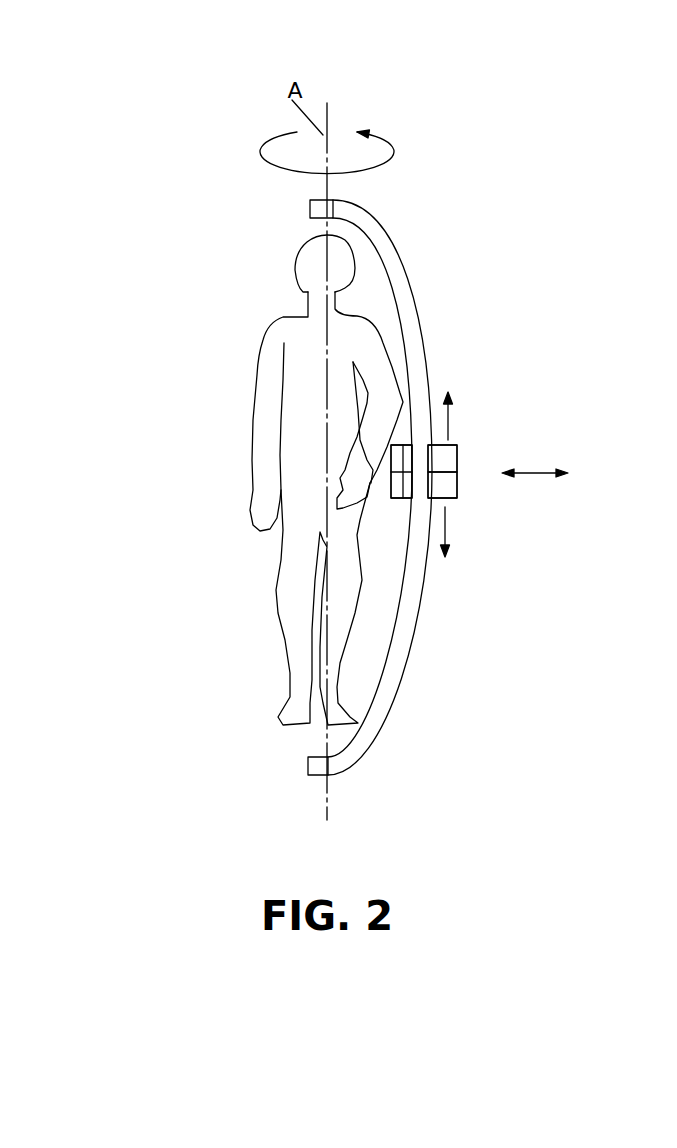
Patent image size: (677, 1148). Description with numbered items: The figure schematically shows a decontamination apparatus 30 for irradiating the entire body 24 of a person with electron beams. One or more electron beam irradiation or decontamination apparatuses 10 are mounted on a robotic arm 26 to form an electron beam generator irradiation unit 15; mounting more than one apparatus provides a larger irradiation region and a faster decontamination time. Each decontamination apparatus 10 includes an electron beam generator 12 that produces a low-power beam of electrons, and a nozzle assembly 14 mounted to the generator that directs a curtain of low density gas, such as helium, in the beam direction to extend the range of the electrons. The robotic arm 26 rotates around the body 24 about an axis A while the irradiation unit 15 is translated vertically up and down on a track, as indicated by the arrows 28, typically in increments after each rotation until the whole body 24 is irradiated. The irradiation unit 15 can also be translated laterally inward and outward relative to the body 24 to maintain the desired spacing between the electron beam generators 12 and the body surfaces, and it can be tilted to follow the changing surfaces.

The electron beam irradiation or decontamination apparatus 10 is at (457, 446).
The electron beam generator 12 is at (458, 464).
The nozzle assembly 14 is at (392, 458).
The electron beam generator irradiation unit 15 is at (518, 377).
The body 24 is at (268, 380).
The robotic arm 26 is at (411, 283).
The arrows 28 is at (449, 419).
The decontamination apparatus 30 is at (492, 183).